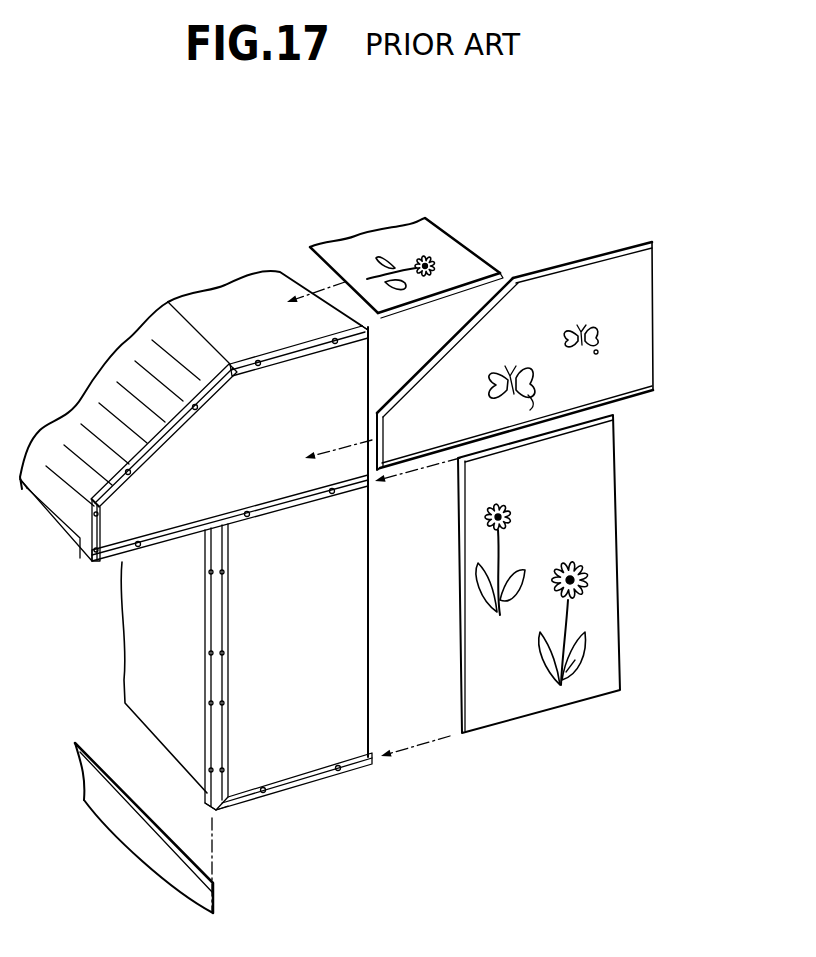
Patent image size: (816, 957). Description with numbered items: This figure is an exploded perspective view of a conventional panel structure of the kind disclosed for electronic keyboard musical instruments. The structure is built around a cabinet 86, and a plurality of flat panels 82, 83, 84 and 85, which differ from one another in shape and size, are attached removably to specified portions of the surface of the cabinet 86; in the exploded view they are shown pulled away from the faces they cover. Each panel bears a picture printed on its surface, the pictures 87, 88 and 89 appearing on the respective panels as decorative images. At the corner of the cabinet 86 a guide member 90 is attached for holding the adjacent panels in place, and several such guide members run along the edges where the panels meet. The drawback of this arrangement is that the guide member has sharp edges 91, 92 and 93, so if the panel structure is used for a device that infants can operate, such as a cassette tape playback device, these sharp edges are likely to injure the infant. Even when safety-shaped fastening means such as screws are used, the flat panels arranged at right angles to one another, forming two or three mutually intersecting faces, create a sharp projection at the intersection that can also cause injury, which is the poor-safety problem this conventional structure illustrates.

The flat panel 82 is at (416, 240).
The flat panel 83 is at (549, 331).
The flat panel 84 is at (584, 574).
The flat panel 85 is at (148, 846).
The cabinet 86 is at (133, 314).
The picture 87 is at (423, 250).
The picture 88 is at (588, 323).
The picture 89 is at (512, 512).
The guide member 90 is at (275, 345).
The sharp edge 91 is at (224, 821).
The sharp edge 92 is at (295, 352).
The sharp edge 93 is at (379, 323).